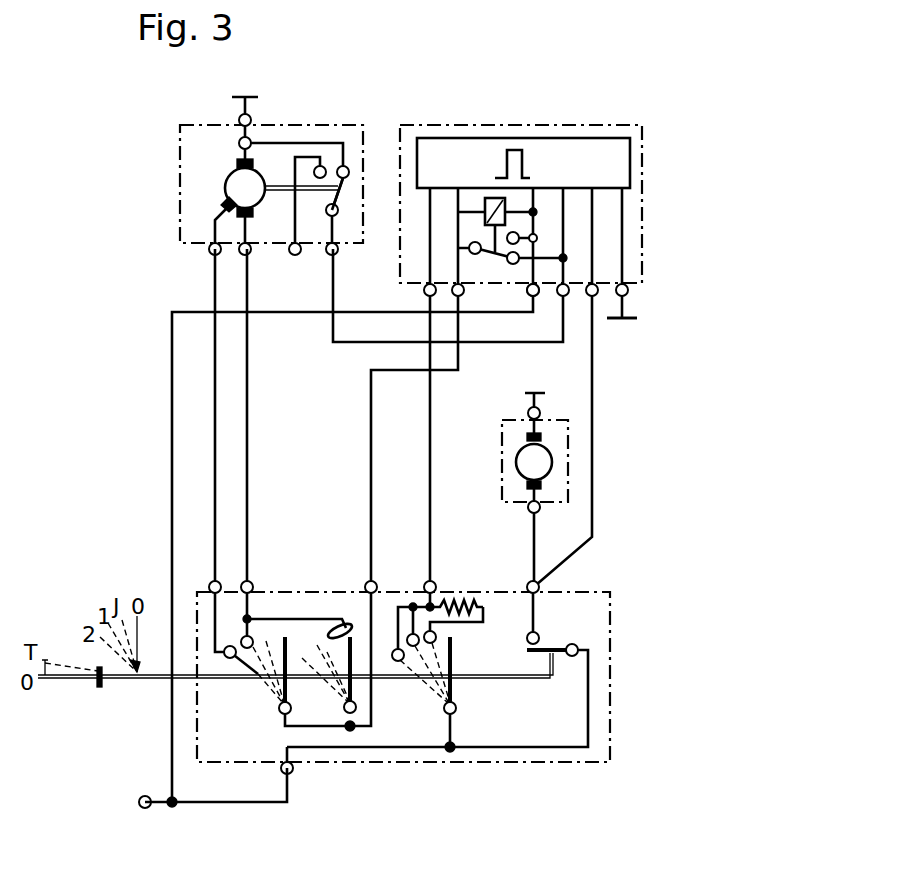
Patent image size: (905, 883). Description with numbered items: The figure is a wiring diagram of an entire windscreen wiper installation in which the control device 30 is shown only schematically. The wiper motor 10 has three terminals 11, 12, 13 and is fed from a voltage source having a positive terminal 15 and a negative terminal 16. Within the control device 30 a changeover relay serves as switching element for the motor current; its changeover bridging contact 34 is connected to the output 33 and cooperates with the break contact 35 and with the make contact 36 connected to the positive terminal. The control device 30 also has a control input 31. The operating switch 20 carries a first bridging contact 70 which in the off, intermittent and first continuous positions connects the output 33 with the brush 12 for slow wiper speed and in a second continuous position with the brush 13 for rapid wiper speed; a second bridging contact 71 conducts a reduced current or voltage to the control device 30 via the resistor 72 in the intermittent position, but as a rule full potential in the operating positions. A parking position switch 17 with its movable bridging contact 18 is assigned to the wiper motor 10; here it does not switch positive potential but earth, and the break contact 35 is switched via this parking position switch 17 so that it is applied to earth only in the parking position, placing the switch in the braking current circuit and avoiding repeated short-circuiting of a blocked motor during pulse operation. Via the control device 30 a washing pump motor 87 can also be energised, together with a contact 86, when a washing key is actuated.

The wiper motor 10 is at (224, 187).
The terminal 11 is at (219, 150).
The brush 12 is at (262, 225).
The brush 13 is at (209, 212).
The positive terminal 15 is at (347, 568).
The negative terminal 16 is at (635, 311).
The parking position switch 17 is at (365, 210).
The movable bridging contact 18 is at (344, 223).
The operating switch 20 is at (346, 662).
The control device 30 is at (541, 207).
The control input 31 is at (575, 313).
The output 33 is at (474, 313).
The changeover bridging contact 34 is at (472, 239).
The break contact 35 is at (523, 303).
The make contact 36 is at (537, 226).
The first bridging contact 70 is at (304, 672).
The second bridging contact 71 is at (449, 692).
The resistor 72 is at (456, 582).
The wash switch contact 86 is at (553, 628).
The washing pump motor 87 is at (538, 490).